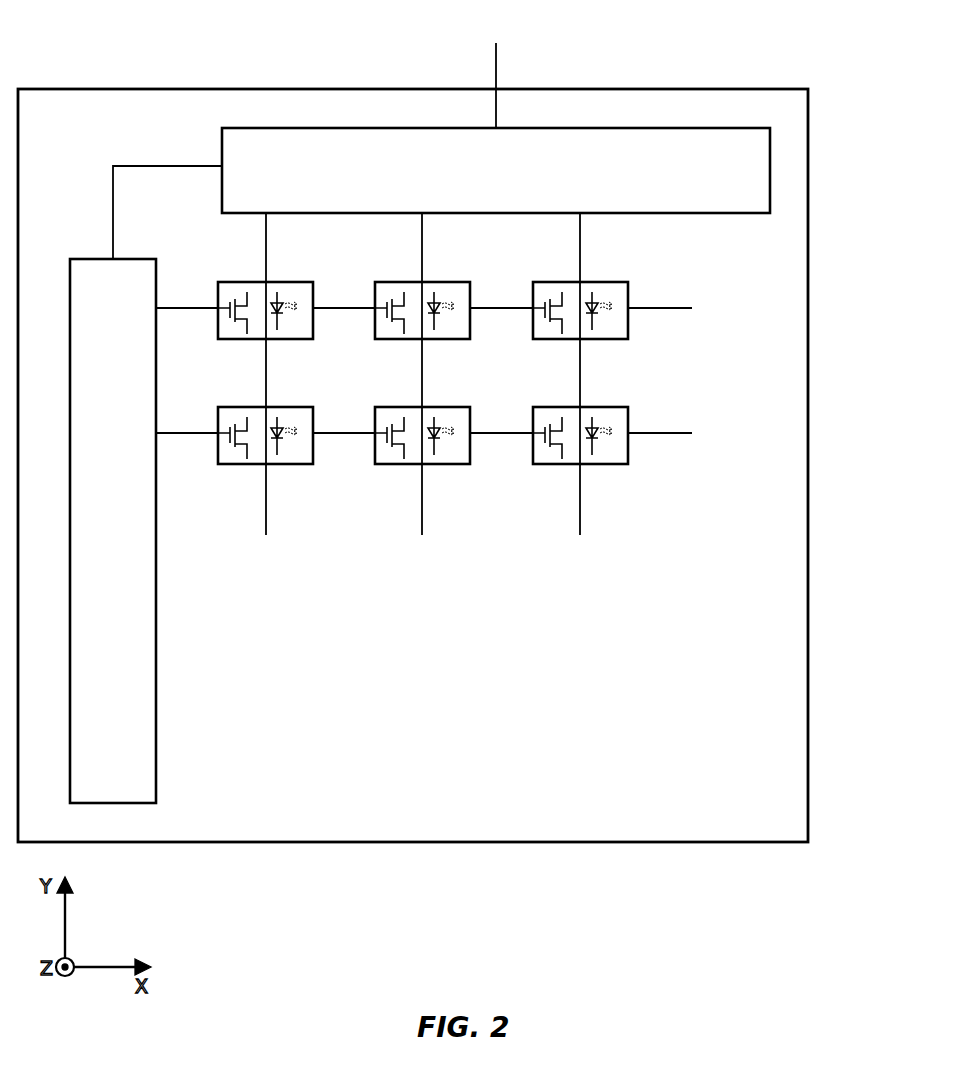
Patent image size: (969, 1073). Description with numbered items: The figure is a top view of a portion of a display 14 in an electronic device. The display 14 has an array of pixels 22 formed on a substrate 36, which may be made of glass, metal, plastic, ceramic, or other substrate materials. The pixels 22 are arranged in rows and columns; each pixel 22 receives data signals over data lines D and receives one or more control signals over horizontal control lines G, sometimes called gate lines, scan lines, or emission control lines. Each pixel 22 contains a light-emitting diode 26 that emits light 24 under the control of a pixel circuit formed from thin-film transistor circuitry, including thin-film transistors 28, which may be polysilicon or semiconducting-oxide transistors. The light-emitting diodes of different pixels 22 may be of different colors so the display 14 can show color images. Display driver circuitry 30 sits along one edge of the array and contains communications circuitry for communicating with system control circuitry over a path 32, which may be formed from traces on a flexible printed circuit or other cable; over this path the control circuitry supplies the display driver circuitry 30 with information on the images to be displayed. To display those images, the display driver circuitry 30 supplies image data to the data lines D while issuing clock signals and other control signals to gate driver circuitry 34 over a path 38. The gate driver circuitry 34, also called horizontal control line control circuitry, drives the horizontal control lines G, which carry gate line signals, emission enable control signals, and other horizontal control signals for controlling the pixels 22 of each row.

The display 14 is at (712, 48).
The pixel 22 is at (456, 400).
The light 24 is at (627, 443).
The light-emitting diode 26 is at (622, 467).
The thin-film transistor 28 is at (534, 462).
The display driver circuitry 30 is at (280, 128).
The path 32 is at (496, 62).
The gate driver circuitry 34 is at (156, 773).
The substrate 36 is at (808, 775).
The path 38 is at (167, 166).